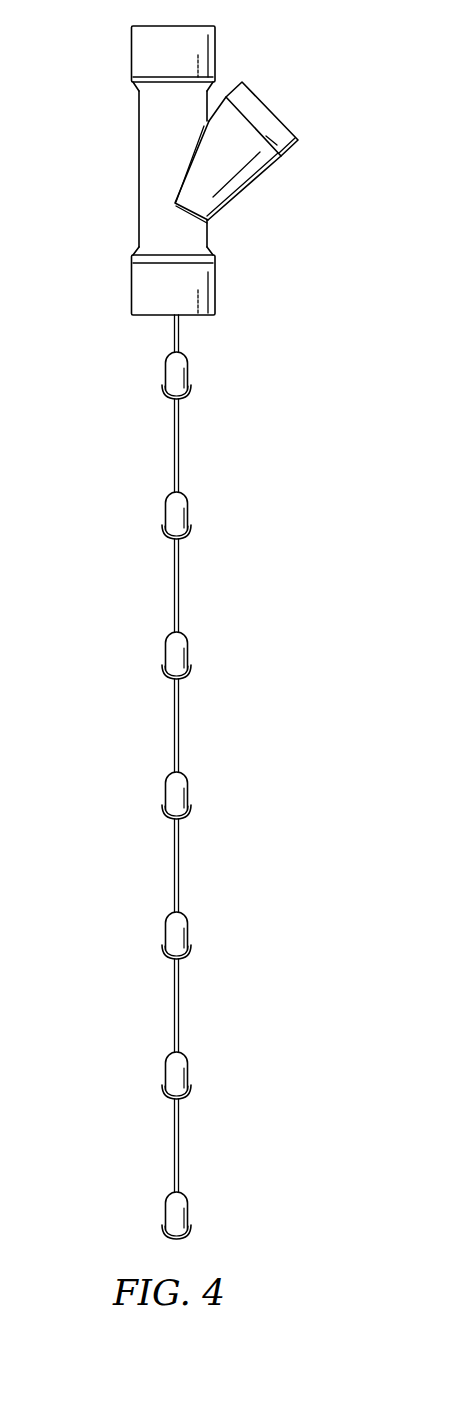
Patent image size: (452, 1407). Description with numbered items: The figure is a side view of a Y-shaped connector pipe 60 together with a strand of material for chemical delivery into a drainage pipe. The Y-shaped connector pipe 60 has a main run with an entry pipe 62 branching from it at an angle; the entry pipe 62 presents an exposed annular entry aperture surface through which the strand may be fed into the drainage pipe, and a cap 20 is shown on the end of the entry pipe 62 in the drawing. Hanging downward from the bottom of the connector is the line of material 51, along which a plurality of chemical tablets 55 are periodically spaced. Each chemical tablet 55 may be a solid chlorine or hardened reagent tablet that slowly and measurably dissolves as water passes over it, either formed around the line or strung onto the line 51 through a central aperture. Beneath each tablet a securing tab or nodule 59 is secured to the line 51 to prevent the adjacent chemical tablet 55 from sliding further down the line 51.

The Y-shaped connector pipe 60 is at (124, 175).
The branch cap 20 is at (268, 105).
The entry pipe 62 is at (258, 170).
The line of material 51 is at (180, 444).
The chemical tablet 55 is at (180, 501).
The securing tab or nodule 59 is at (184, 535).